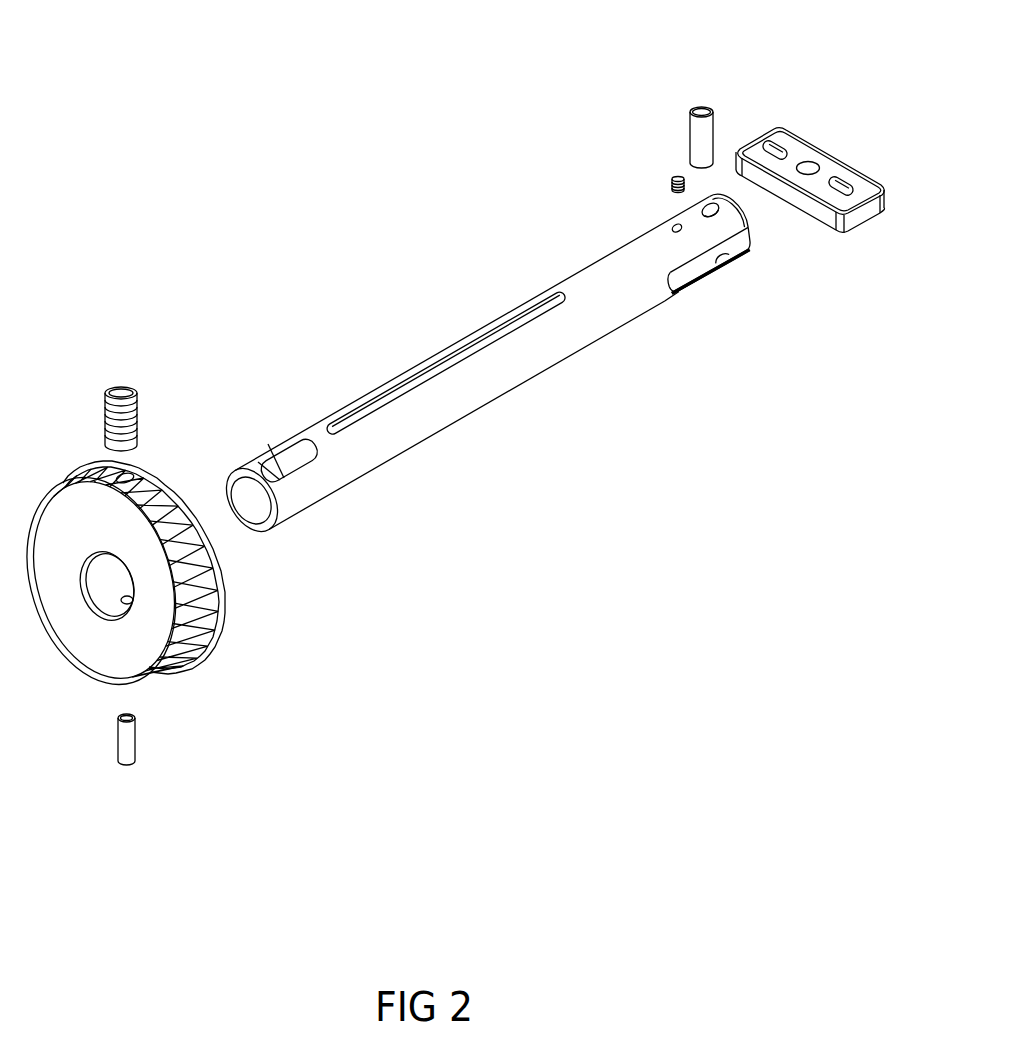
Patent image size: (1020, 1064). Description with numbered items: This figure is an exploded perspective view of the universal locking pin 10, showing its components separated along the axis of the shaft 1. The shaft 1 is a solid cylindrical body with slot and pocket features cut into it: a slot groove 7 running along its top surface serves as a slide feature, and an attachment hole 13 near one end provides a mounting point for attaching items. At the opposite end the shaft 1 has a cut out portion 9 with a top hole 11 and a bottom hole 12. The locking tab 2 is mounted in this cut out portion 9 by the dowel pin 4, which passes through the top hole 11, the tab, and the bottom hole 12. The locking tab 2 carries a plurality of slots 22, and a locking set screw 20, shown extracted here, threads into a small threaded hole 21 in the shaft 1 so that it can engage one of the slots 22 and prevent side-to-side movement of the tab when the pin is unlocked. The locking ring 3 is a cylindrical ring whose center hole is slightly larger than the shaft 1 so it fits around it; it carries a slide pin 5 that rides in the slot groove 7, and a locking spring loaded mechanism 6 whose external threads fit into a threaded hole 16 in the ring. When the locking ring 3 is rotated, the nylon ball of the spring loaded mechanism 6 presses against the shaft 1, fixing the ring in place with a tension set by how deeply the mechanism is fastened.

The shaft 1 is at (558, 368).
The locking tab 2 is at (822, 148).
The locking ring 3 is at (212, 652).
The dowel pin 4 is at (689, 112).
The slide pin 5 is at (139, 764).
The locking spring loaded mechanism 6 is at (120, 386).
The slot groove 7 is at (441, 362).
The cut out portion 9 is at (687, 285).
The universal locking pin 10 is at (278, 192).
The top hole 11 is at (722, 212).
The bottom hole 12 is at (730, 256).
The attachment hole 13 is at (288, 458).
The threaded hole 16 is at (133, 476).
The locking set screw 20 is at (668, 182).
The small threaded hole 21 is at (673, 226).
The slots 22 is at (767, 143).